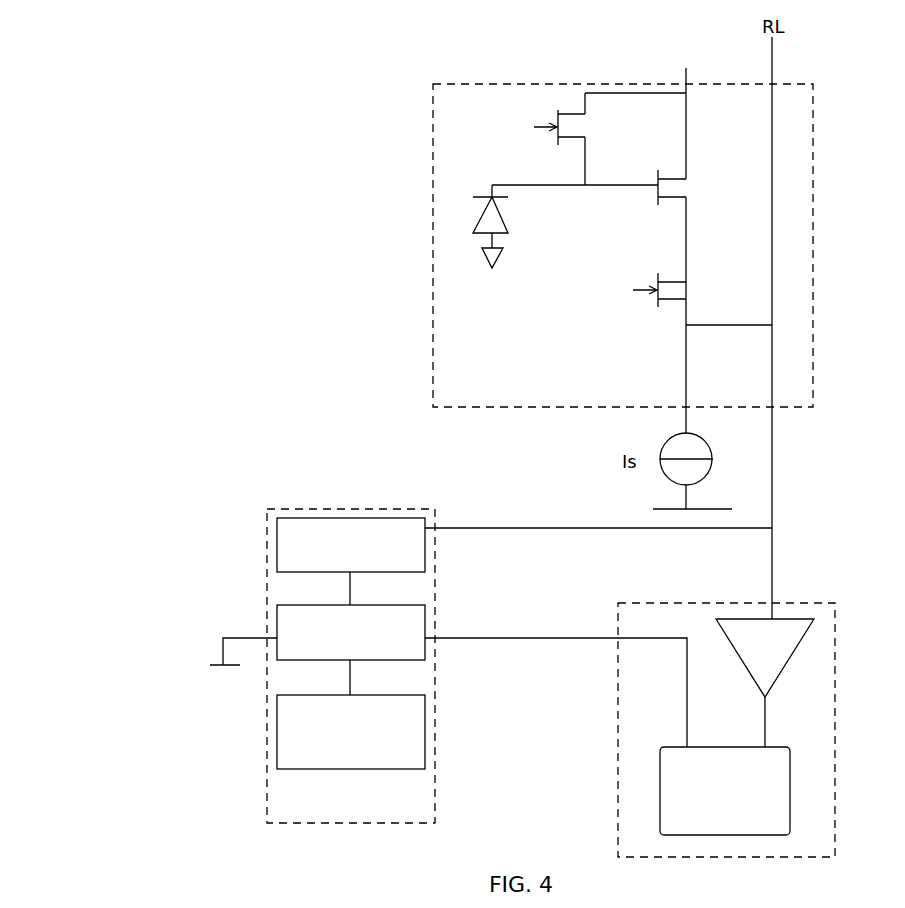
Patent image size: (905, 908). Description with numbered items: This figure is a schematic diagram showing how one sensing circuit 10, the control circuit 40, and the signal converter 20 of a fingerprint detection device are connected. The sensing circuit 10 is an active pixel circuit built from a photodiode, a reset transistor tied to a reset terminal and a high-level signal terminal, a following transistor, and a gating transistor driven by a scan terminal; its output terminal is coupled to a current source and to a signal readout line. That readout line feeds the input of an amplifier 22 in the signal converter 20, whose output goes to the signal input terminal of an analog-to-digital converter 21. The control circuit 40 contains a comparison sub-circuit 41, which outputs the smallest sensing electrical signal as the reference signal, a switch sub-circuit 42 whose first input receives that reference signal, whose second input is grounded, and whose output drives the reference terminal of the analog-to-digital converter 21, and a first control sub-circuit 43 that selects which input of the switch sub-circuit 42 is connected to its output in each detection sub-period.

The sensing circuit 10 is at (433, 240).
The signal converter 20 is at (711, 717).
The analog-to-digital converter 21 is at (665, 792).
The amplifier 22 is at (795, 650).
The control circuit 40 is at (327, 647).
The comparison sub-circuit 41 is at (277, 553).
The switch sub-circuit 42 is at (277, 617).
The first control sub-circuit 43 is at (277, 745).